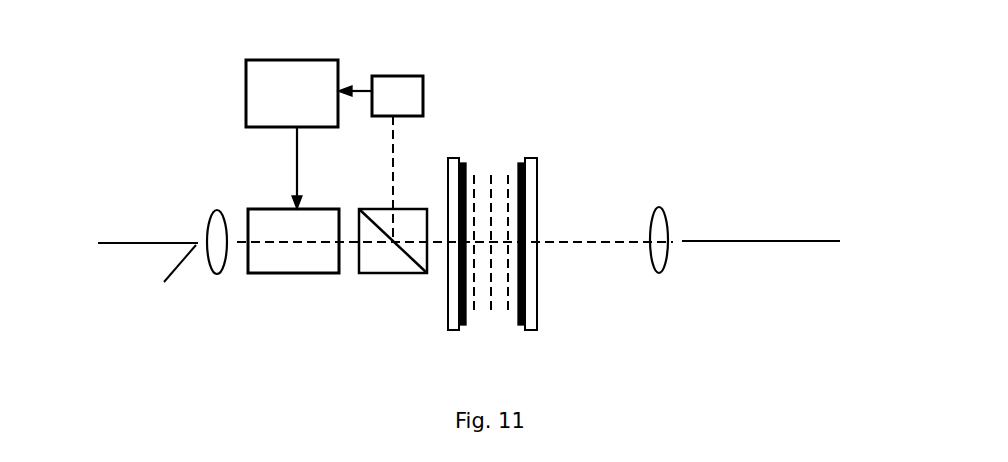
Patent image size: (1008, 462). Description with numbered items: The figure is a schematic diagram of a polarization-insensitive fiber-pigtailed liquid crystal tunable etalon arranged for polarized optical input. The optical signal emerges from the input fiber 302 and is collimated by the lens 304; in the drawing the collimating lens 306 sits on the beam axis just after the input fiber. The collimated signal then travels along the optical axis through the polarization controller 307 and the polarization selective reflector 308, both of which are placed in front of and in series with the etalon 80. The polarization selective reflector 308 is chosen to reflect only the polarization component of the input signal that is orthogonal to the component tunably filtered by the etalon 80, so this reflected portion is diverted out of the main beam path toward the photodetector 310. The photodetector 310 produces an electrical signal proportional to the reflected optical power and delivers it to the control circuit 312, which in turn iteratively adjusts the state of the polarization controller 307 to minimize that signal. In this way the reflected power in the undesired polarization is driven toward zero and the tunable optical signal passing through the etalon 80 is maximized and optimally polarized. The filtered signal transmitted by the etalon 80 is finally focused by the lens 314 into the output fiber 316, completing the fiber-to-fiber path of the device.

The fiber 302 is at (146, 232).
The lens 304 is at (163, 276).
The collimating lens 306 is at (213, 210).
The polarization controller 307 is at (333, 274).
The polarization selective reflector 308 is at (428, 256).
The photodetector 310 is at (424, 88).
The control circuit 312 is at (290, 116).
The lens 314 is at (652, 223).
The output fiber 316 is at (771, 241).
The etalon 80 is at (482, 160).